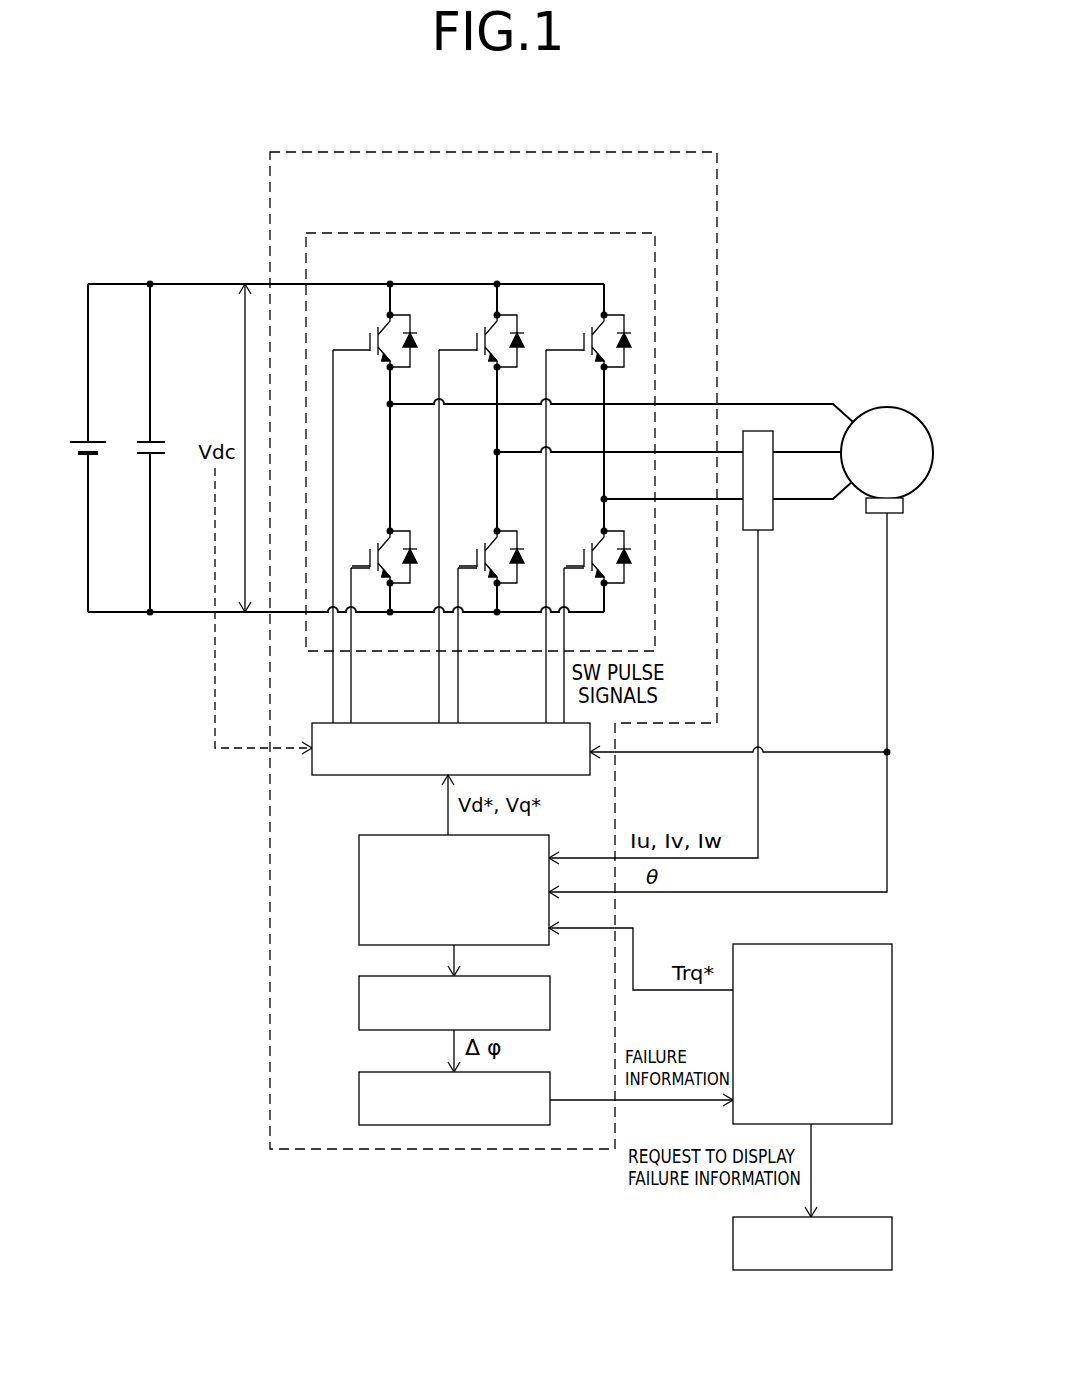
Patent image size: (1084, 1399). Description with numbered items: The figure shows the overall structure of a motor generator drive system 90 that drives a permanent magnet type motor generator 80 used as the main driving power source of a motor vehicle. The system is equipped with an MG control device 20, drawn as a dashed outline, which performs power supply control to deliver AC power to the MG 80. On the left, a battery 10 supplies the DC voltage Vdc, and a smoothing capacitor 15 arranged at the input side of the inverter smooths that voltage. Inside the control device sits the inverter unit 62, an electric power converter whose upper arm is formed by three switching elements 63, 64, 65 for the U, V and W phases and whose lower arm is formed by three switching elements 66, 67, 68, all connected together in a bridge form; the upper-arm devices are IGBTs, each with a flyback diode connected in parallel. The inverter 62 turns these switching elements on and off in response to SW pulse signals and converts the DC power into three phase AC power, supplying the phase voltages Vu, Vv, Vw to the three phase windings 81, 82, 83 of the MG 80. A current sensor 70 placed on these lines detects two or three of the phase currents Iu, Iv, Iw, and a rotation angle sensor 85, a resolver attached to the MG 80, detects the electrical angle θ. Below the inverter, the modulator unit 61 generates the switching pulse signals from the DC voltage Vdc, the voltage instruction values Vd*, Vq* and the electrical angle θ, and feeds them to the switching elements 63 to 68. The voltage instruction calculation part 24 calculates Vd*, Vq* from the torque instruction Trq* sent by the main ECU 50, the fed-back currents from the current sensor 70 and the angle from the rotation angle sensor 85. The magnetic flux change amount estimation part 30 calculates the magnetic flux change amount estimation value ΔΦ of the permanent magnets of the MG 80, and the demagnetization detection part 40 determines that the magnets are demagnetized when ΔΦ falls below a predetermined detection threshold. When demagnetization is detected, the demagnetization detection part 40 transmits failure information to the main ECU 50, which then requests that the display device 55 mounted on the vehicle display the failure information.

The battery 10 is at (80, 440).
The smoothing capacitor 15 is at (145, 440).
The MG control device 20 is at (437, 152).
The voltage instruction calculation part 24 is at (359, 890).
The magnetic flux change amount estimation part 30 is at (359, 1003).
The demagnetization detection part 40 is at (359, 1098).
The main electronic control unit (main ECU) 50 is at (892, 1023).
The display device 55 is at (892, 1243).
The modulator unit 61 is at (378, 723).
The inverter unit 62 is at (585, 233).
The switching element 63 is at (388, 322).
The switching element 64 is at (495, 322).
The switching element 65 is at (602, 322).
The switching element 66 is at (388, 537).
The switching element 67 is at (495, 537).
The switching element 68 is at (602, 537).
The current sensor 70 is at (757, 431).
The motor generator (MG) 80 is at (886, 408).
The phase winding 81 is at (800, 404).
The phase winding 82 is at (808, 452).
The phase winding 83 is at (818, 500).
The rotation angle sensor 85 is at (893, 514).
The motor generator drive system (MG drive system) 90 is at (797, 295).